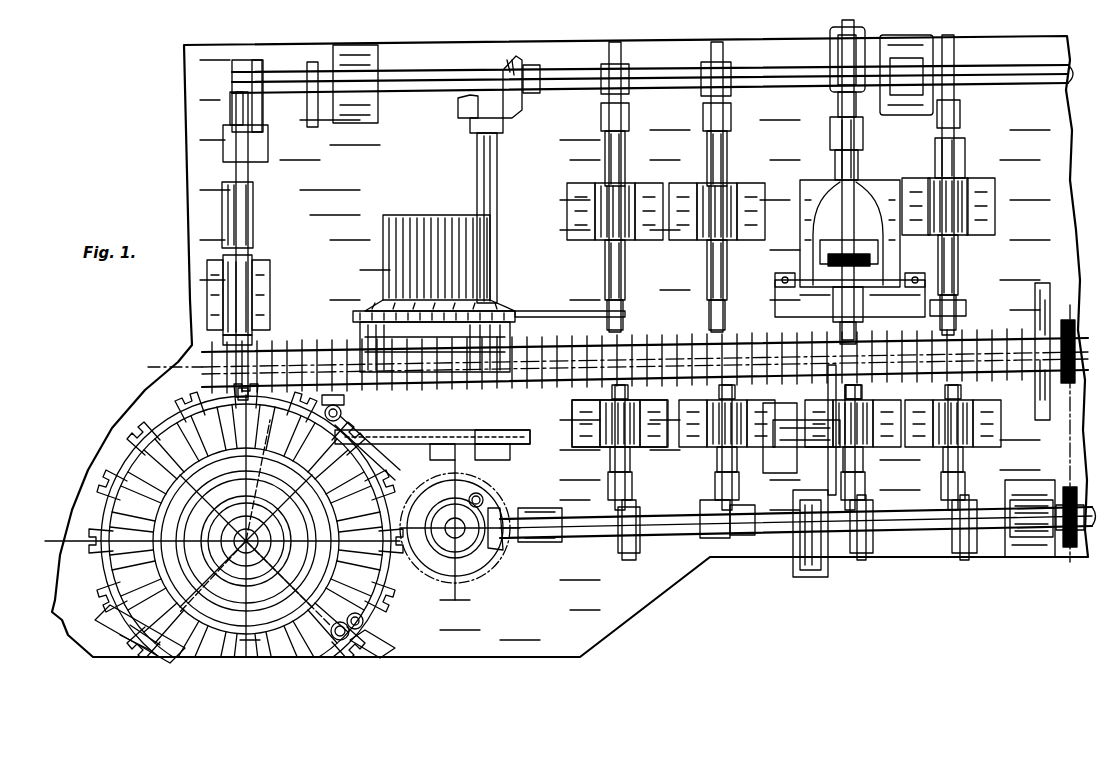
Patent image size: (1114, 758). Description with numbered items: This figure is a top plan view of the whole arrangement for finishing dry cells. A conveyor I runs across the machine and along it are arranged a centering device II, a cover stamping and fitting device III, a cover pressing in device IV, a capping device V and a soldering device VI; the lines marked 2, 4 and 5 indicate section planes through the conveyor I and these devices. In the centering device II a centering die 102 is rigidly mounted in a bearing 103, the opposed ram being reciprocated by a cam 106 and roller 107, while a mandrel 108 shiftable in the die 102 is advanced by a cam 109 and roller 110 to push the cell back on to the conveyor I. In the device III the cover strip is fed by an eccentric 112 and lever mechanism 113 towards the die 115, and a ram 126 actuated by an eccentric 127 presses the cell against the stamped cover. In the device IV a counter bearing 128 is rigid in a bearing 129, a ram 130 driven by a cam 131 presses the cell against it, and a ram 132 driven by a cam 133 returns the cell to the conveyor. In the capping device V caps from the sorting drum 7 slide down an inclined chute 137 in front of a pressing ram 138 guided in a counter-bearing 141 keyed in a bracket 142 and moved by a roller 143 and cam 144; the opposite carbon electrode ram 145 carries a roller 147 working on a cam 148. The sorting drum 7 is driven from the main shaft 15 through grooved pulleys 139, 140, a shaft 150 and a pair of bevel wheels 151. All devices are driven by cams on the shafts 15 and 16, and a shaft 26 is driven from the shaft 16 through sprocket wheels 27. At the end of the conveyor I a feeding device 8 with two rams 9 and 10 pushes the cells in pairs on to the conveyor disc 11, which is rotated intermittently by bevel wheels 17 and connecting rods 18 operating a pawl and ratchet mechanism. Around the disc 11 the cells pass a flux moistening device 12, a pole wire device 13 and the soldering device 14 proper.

The rack bar 2 is at (626, 361).
The spindle III 4 is at (858, 575).
The spindle II 5 is at (953, 35).
The sorting drum 7 is at (490, 262).
The feeding device 8 is at (250, 278).
The ram 9 is at (250, 195).
The ram 10 is at (250, 230).
The conveyor disc 11 is at (180, 430).
The moistening device 12 is at (370, 630).
The pole wire device 13 is at (260, 655).
The soldering device 14 is at (130, 648).
The main shaft 15 is at (1020, 80).
The shaft 16 is at (596, 538).
The bevel wheels 17 is at (490, 555).
The connecting rods 18 is at (350, 412).
The shaft 26 is at (565, 378).
The sprocket wheels 27 is at (1072, 370).
The centering die 102 is at (956, 280).
The bearing 103 is at (995, 188).
The cam 106 is at (973, 547).
The roller 107 is at (965, 474).
The mandrel 108 is at (958, 255).
The cam 109 is at (954, 50).
The roller 110 is at (959, 113).
The eccentric 112 is at (805, 560).
The lever mechanism 113 is at (815, 420).
The die 115 is at (862, 157).
The ram 126 is at (862, 391).
The eccentric 127 is at (873, 547).
The counter bearing 128 is at (711, 276).
The bearing 129 is at (745, 195).
The ram 130 is at (735, 391).
The cam 131 is at (740, 545).
The ram 132 is at (727, 137).
The cam 133 is at (728, 57).
The inclined chute 137 is at (570, 323).
The pressing ram 138 is at (625, 137).
The grooved pulley 139 is at (405, 432).
The grooved pulley 140 is at (525, 432).
The counter-bearing 141 is at (625, 170).
The bracket 142 is at (652, 240).
The roller 143 is at (629, 112).
The cam 144 is at (622, 58).
The carbon electrode ram 145 is at (628, 391).
The roller 147 is at (632, 486).
The cam 148 is at (640, 547).
The shaft 150 is at (497, 185).
The bevel wheels 151 is at (522, 104).
The conveyor I is at (720, 350).
The centering device II is at (955, 400).
The cover stamping and fitting device III is at (845, 240).
The cover pressing in device IV is at (730, 385).
The capping device V is at (610, 330).
The soldering device VI is at (110, 455).